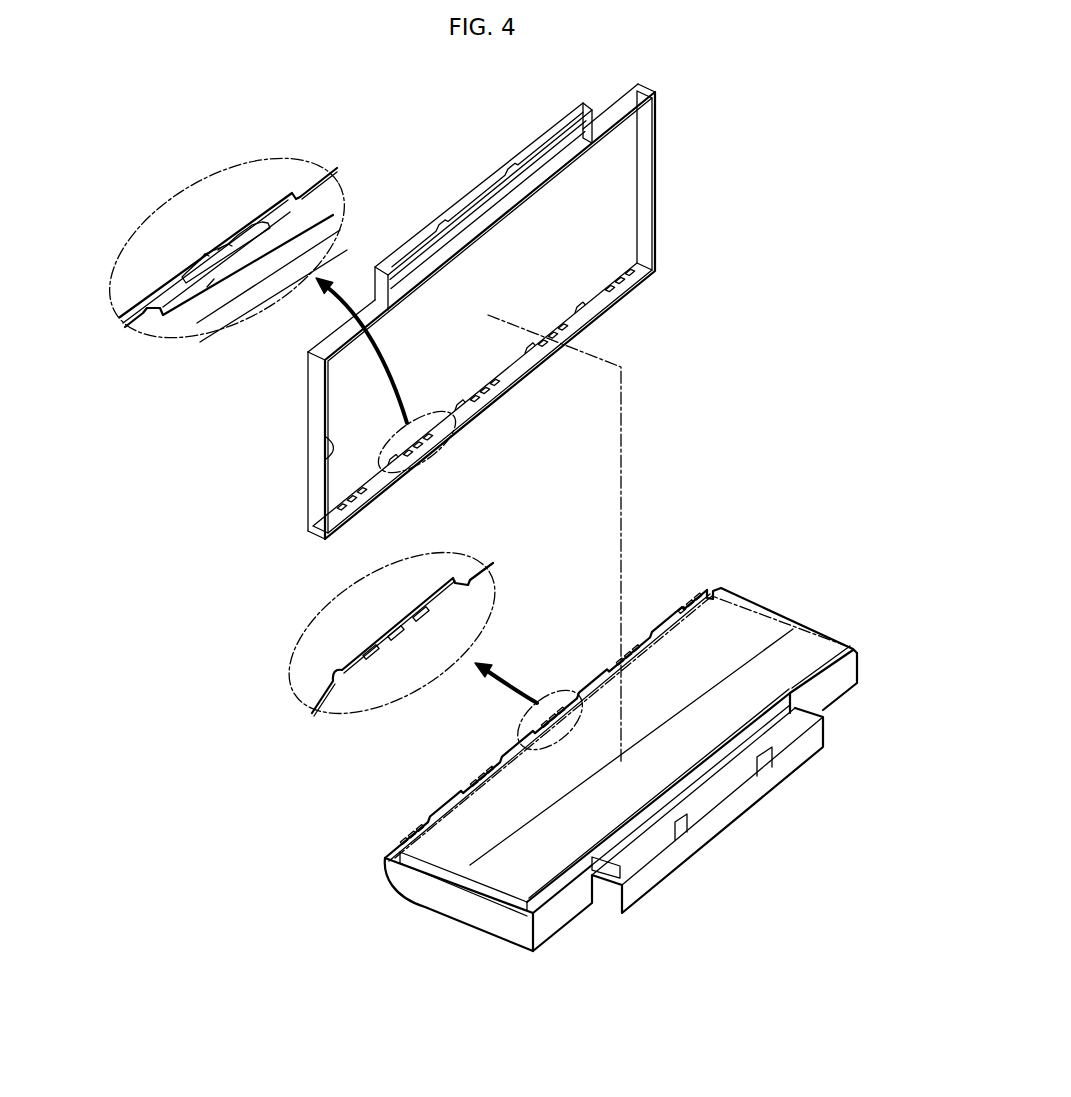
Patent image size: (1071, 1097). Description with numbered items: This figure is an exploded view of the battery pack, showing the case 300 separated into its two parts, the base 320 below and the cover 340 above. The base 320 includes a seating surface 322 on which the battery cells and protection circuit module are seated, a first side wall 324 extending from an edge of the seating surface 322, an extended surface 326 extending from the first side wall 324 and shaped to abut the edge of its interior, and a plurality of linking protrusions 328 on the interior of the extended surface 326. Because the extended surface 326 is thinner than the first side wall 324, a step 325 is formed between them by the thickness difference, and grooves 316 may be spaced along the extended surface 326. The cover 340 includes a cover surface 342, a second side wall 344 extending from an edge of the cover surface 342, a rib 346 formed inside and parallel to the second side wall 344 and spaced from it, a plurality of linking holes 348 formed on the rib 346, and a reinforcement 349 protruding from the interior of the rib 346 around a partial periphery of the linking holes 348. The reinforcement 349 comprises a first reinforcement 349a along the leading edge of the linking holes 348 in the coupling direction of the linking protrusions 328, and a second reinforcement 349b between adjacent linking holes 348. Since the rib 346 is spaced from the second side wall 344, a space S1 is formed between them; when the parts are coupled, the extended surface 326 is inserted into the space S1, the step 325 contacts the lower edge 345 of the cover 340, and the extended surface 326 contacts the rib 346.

The case 300 is at (772, 258).
The grooves 316 is at (446, 802).
The base 320 is at (792, 820).
The seating surface 322 is at (768, 674).
The first side wall 324 is at (828, 692).
The step 325 is at (651, 860).
The extended surface 326 is at (713, 588).
The linking protrusions 328 is at (693, 602).
The cover 340 is at (456, 150).
The cover surface 342 is at (621, 152).
The second side wall 344 is at (648, 170).
The lower edge 345 is at (330, 451).
The rib 346 is at (274, 206).
The linking holes 348 is at (237, 222).
The reinforcement 349 is at (142, 216).
The first reinforcement 349a is at (192, 273).
The second reinforcement 349b is at (201, 256).
The space S1 is at (211, 283).